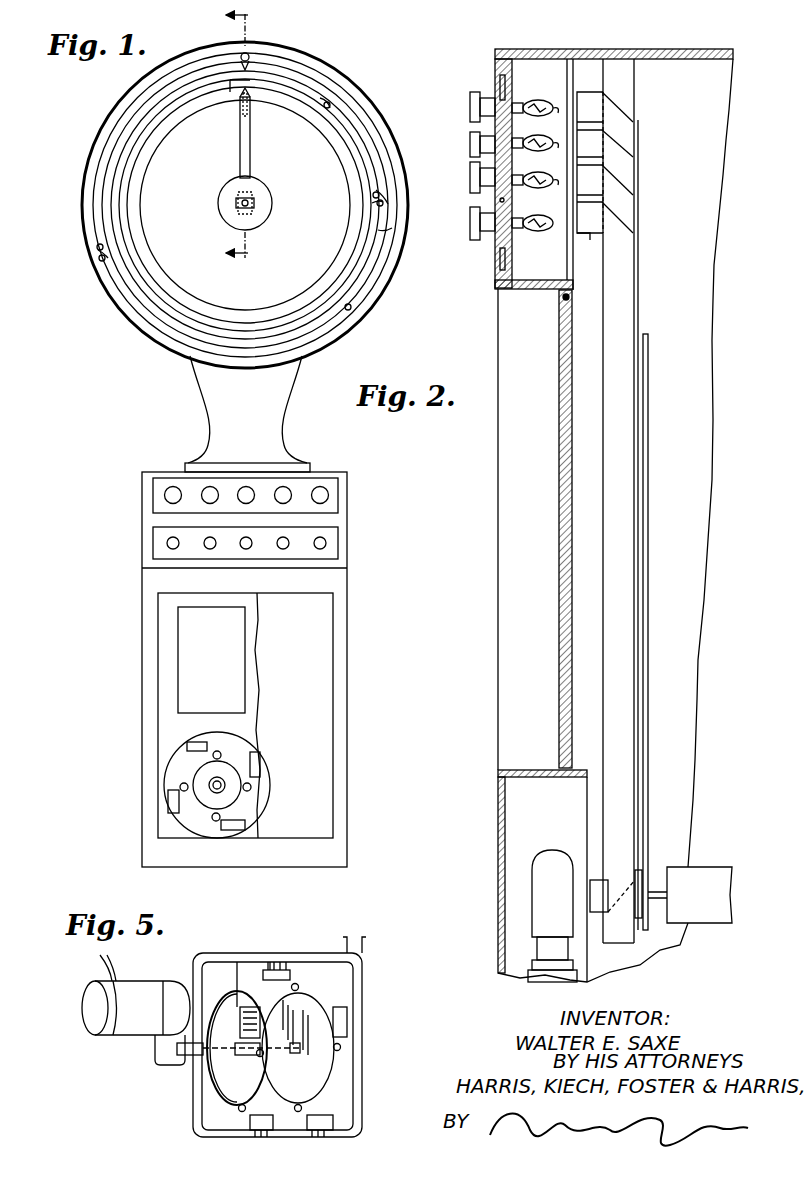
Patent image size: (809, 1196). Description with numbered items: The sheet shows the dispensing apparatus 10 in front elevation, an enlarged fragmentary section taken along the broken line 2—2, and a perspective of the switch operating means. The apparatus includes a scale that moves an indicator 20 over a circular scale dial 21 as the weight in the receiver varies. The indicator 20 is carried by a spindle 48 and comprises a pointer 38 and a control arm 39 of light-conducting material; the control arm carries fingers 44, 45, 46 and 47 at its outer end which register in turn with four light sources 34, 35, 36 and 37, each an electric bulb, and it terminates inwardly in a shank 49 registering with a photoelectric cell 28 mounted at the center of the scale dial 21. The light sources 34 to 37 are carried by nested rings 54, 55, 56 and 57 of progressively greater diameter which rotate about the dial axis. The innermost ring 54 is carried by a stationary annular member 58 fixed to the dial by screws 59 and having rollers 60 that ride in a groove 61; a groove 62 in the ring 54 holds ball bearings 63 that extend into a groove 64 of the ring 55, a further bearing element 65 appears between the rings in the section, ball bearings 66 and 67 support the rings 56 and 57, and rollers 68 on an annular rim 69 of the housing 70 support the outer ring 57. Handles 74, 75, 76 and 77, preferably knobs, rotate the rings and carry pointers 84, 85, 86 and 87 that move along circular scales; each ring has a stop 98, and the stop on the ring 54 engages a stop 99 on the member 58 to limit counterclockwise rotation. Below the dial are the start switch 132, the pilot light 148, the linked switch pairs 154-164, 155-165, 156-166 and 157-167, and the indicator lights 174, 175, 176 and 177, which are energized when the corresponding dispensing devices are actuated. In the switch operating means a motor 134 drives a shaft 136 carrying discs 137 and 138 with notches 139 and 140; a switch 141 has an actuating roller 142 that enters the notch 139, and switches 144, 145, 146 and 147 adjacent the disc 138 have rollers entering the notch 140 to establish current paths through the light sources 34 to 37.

In FIG. 1, the section line 2— 2 is at (246, 136).
In FIG. 1, the dispensing apparatus 10 is at (331, 52).
In FIG. 1, the indicator 20 is at (250, 140).
In FIG. 2, the indicator 20 is at (630, 437).
In FIG. 1, the scale dial 21 is at (334, 163).
In FIG. 2, the scale dial 21 is at (559, 482).
In FIG. 1, the photoelectric cell 28 is at (258, 199).
In FIG. 2, the photoelectric cell 28 is at (532, 890).
In FIG. 2, the light source 34 is at (535, 237).
In FIG. 2, the light source 35 is at (559, 197).
In FIG. 2, the light source 36 is at (559, 158).
In FIG. 2, the light source 37 is at (558, 122).
In FIG. 1, the pointer 38 is at (243, 117).
In FIG. 2, the pointer 38 is at (649, 374).
In FIG. 2, the control arm 39 is at (636, 298).
In FIG. 2, the finger 44 is at (588, 242).
In FIG. 2, the finger 45 is at (595, 193).
In FIG. 2, the finger 46 is at (600, 156).
In FIG. 2, the finger 47 is at (593, 110).
In FIG. 2, the spindle 48 is at (660, 903).
In FIG. 2, the shank 49 is at (598, 913).
In FIG. 1, the ring 54 is at (324, 133).
In FIG. 2, the ring 54 is at (532, 236).
In FIG. 1, the ring 55 is at (381, 235).
In FIG. 2, the ring 55 is at (532, 169).
In FIG. 1, the ring 56 is at (343, 315).
In FIG. 2, the ring 56 is at (532, 132).
In FIG. 1, the ring 57 is at (167, 333).
In FIG. 2, the ring 57 is at (520, 97).
In FIG. 1, the stationary annular member 58 is at (288, 145).
In FIG. 2, the stationary annular member 58 is at (510, 293).
In FIG. 2, the screws 59 is at (558, 313).
In FIG. 2, the rollers 60 is at (497, 275).
In FIG. 2, the groove 61 is at (500, 250).
In FIG. 2, the groove 62 is at (505, 200).
In FIG. 2, the ball bearings 63 is at (495, 205).
In FIG. 2, the groove 64 is at (495, 195).
In FIG. 2, the lever 65 is at (483, 158).
In FIG. 2, the ball bearings 66 is at (483, 142).
In FIG. 2, the ball bearings 67 is at (483, 130).
In FIG. 2, the rollers 68 is at (499, 78).
In FIG. 1, the annular rim 69 is at (289, 50).
In FIG. 2, the annular rim 69 is at (521, 50).
In FIG. 2, the housing 70 is at (670, 58).
In FIG. 1, the handle 74 is at (343, 115).
In FIG. 2, the handle 74 is at (483, 233).
In FIG. 1, the handle 75 is at (385, 202).
In FIG. 2, the handle 75 is at (480, 180).
In FIG. 1, the handle 76 is at (350, 311).
In FIG. 2, the handle 76 is at (490, 160).
In FIG. 1, the handle 77 is at (100, 262).
In FIG. 2, the handle 77 is at (470, 100).
In FIG. 1, the pointer 84 is at (322, 110).
In FIG. 2, the pointer 84 is at (497, 240).
In FIG. 1, the pointer 85 is at (377, 208).
In FIG. 2, the pointer 85 is at (480, 222).
In FIG. 1, the pointer 86 is at (346, 309).
In FIG. 2, the pointer 86 is at (483, 168).
In FIG. 1, the pointer 87 is at (104, 258).
In FIG. 2, the pointer 87 is at (497, 128).
In FIG. 1, the stop 98 is at (72, 265).
In FIG. 1, the stop 99 is at (230, 95).
In FIG. 1, the start switch 132 is at (163, 493).
In FIG. 5, the motor 134 is at (140, 1030).
In FIG. 1, the shaft 136 is at (220, 783).
In FIG. 5, the shaft 136 is at (190, 1063).
In FIG. 5, the disc 137 is at (217, 1088).
In FIG. 1, the disc 138 is at (240, 798).
In FIG. 5, the disc 138 is at (323, 1087).
In FIG. 5, the notch 139 is at (223, 1105).
In FIG. 1, the notch 140 is at (193, 772).
In FIG. 5, the notch 140 is at (273, 1023).
In FIG. 5, the switch 141 is at (277, 1125).
In FIG. 5, the actuating roller 142 is at (242, 1112).
In FIG. 1, the switch 144 is at (197, 742).
In FIG. 5, the switch 144 is at (290, 975).
In FIG. 1, the switch 145 is at (258, 768).
In FIG. 5, the switch 145 is at (348, 1023).
In FIG. 1, the switch 146 is at (237, 831).
In FIG. 5, the switch 146 is at (303, 1125).
In FIG. 1, the switch 147 is at (168, 806).
In FIG. 5, the switch 147 is at (252, 1008).
In FIG. 1, the pilot light 148 is at (167, 548).
In FIG. 1, the normally closed switch and normally open switch 154-164 is at (217, 492).
In FIG. 1, the normally closed switch and normally open switch 155-165 is at (253, 492).
In FIG. 1, the normally closed switch and normally open switch 156-166 is at (290, 493).
In FIG. 1, the normally closed switch and normally open switch 157-167 is at (327, 498).
In FIG. 1, the indicator light 174 is at (210, 550).
In FIG. 1, the indicator light 175 is at (246, 550).
In FIG. 1, the indicator light 176 is at (283, 550).
In FIG. 1, the indicator light 177 is at (323, 548).